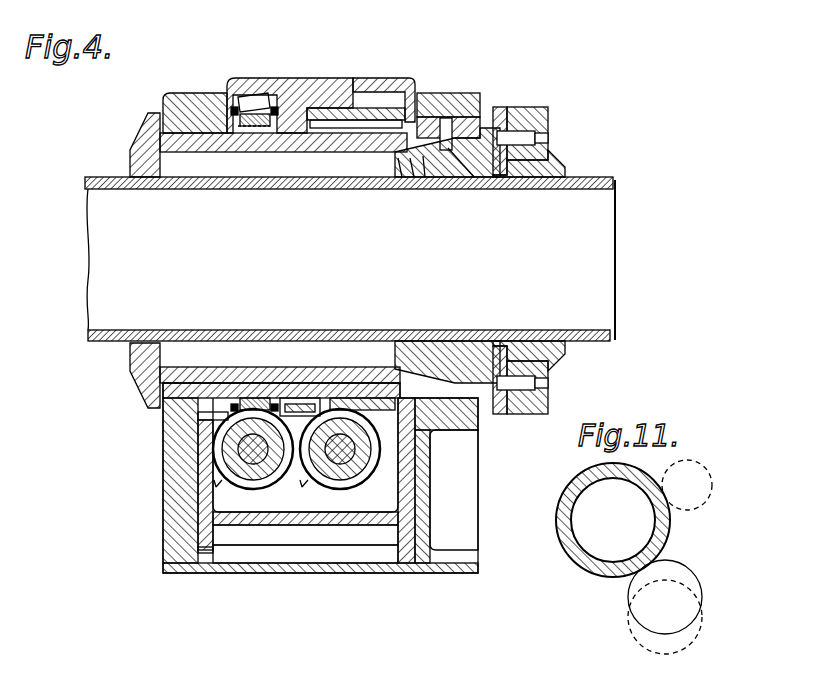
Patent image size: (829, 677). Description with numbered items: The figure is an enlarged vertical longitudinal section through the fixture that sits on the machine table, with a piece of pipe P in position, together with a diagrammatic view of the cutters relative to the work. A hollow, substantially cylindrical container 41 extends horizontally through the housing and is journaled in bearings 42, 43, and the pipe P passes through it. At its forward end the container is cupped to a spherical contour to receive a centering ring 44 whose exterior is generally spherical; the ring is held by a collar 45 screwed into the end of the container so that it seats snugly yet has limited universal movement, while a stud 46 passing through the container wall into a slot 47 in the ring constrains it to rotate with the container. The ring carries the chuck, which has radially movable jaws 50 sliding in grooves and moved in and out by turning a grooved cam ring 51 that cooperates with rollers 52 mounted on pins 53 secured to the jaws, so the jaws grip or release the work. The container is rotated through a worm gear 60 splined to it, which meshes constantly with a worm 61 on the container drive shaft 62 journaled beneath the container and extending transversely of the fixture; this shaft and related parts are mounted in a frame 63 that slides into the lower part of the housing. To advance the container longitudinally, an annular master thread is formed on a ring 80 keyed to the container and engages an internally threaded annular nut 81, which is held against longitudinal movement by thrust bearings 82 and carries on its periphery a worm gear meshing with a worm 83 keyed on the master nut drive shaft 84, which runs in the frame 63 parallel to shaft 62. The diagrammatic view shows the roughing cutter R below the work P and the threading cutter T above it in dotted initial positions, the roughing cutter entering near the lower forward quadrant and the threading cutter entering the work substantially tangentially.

In FIG. 4, the pipe P is at (316, 190).
In FIG. 11, the pipe P is at (577, 519).
In FIG. 4, the container 41 is at (327, 146).
In FIG. 4, the bearing 42 is at (474, 120).
In FIG. 4, the bearing 43 is at (160, 132).
In FIG. 4, the centering ring 44 is at (402, 177).
In FIG. 4, the collar 45 is at (474, 177).
In FIG. 4, the stud 46 is at (425, 177).
In FIG. 4, the slot 47 is at (414, 177).
In FIG. 4, the jaws 50 is at (566, 160).
In FIG. 4, the cam ring 51 is at (498, 109).
In FIG. 4, the rollers 52 is at (548, 117).
In FIG. 4, the pins 53 is at (549, 150).
In FIG. 4, the worm gear 60 is at (362, 113).
In FIG. 4, the worm 61 is at (365, 477).
In FIG. 4, the container drive shaft 62 is at (345, 487).
In FIG. 4, the frame 63 is at (275, 503).
In FIG. 4, the ring 80 is at (257, 116).
In FIG. 4, the annular nut 81 is at (250, 105).
In FIG. 4, the thrust bearings 82 is at (275, 102).
In FIG. 4, the worm 83 is at (249, 488).
In FIG. 4, the master nut drive shaft 84 is at (240, 454).
In FIG. 11, the threading cutter T is at (713, 484).
In FIG. 11, the roughing cutter R is at (705, 621).